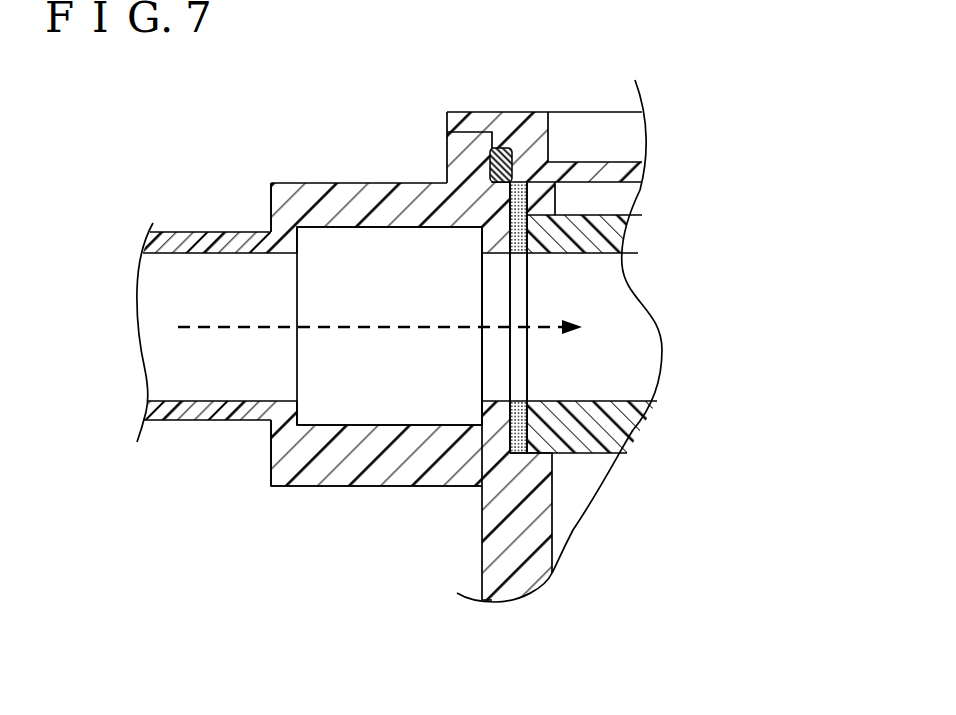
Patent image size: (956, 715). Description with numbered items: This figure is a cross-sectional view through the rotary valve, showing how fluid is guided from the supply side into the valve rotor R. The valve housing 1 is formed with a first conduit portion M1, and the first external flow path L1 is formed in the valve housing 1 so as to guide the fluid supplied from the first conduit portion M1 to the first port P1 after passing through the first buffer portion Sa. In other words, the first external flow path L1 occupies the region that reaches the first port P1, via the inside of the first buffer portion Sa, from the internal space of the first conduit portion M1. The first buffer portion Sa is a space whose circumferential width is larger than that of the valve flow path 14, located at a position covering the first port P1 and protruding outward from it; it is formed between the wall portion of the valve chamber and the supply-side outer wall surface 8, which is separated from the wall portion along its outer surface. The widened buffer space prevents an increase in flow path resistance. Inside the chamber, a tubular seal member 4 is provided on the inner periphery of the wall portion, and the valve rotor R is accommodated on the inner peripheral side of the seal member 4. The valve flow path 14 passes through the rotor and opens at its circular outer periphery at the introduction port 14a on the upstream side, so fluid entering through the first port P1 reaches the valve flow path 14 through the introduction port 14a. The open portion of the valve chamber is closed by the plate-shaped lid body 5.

The valve housing 1 is at (497, 548).
The seal member 4 is at (517, 453).
The lid body 5 is at (514, 123).
The supply-side outer wall surface 8 is at (271, 207).
The valve flow path 14 is at (612, 377).
The introduction port 14a is at (527, 288).
The first conduit portion M1 is at (202, 233).
The valve rotor R is at (600, 223).
The first buffer portion Sa is at (427, 290).
The first external flow path L1 is at (403, 355).
The first port P1 is at (482, 365).